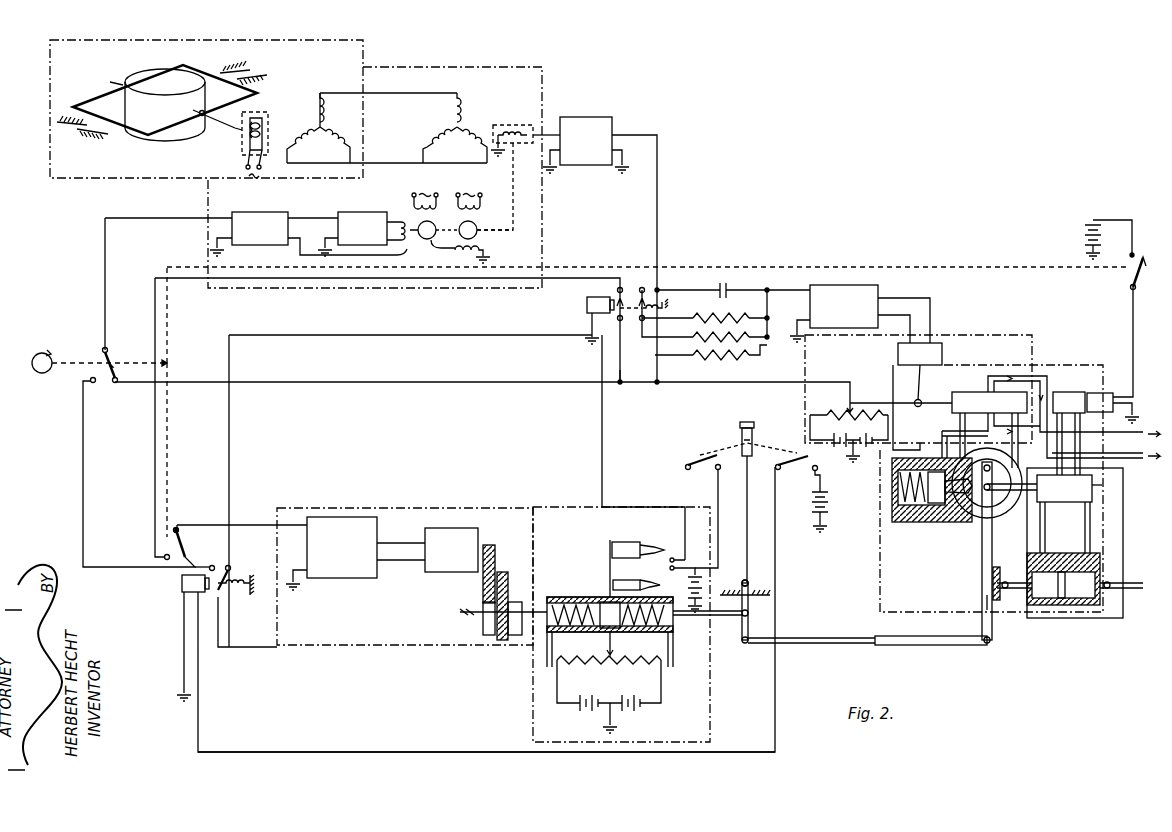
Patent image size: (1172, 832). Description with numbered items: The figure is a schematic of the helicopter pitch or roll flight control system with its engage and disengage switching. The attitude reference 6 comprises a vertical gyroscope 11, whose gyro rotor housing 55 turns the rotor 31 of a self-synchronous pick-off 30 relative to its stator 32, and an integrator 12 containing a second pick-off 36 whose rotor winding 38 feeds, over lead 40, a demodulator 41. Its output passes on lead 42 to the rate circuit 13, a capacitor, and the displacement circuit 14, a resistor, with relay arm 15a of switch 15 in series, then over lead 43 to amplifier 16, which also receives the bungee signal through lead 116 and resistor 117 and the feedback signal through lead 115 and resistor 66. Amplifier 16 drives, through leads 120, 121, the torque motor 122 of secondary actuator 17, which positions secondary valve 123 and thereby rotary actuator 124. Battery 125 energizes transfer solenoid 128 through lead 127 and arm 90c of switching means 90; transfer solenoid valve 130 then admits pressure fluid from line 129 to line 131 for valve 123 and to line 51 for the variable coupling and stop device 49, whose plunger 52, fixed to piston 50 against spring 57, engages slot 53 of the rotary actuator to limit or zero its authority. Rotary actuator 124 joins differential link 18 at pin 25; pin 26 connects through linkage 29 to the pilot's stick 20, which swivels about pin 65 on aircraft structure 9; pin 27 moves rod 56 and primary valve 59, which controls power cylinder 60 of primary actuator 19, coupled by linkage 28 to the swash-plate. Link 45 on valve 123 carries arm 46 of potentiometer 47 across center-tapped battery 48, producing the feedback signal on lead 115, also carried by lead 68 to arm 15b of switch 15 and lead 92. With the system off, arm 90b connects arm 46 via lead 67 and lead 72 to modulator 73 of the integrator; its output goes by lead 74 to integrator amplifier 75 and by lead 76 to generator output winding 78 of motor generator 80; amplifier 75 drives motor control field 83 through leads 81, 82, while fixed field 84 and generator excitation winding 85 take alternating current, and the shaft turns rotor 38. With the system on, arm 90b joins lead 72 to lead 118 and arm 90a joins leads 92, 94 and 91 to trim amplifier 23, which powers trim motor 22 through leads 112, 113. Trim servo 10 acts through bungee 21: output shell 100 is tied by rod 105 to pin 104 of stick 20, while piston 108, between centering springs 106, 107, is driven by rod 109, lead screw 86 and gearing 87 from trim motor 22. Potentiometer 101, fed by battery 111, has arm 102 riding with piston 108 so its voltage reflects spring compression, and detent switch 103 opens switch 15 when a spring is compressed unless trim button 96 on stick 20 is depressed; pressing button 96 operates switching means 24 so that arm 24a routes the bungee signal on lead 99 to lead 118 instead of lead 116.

The attitude reference 6 is at (45, 144).
The aircraft structure 9 is at (83, 128).
The trim servo 10 is at (366, 502).
The vertical gyroscope 11 is at (122, 65).
The integrator 12 is at (509, 64).
The rate circuit 13 is at (738, 285).
The displacement circuit 14 is at (734, 300).
The switch 15 is at (576, 308).
The relay contact or arm 15a is at (640, 325).
The arm 15b is at (622, 287).
The amplifier 16 is at (854, 285).
The secondary actuator 17 is at (1028, 339).
The differential link 18 is at (982, 602).
The primary actuator 19 is at (1134, 520).
The pilot's stick 20 is at (778, 468).
The bungee 21 is at (554, 507).
The trim motor 22 is at (463, 574).
The trim amplifier 23 is at (343, 586).
The switching means 24 is at (237, 568).
The arm 24a is at (226, 596).
The pin 25 is at (1020, 470).
The pin 26 is at (989, 646).
The pin 27 is at (1007, 504).
The linkage 28 is at (1134, 587).
The linkage 29 is at (927, 646).
The self-synchronous pick-off 30 is at (398, 107).
The rotor winding 31 is at (263, 124).
The stator winding 32 is at (324, 98).
The self-synchronous pick-off 36 is at (487, 111).
The rotor winding 38 is at (514, 125).
The lead 40 is at (547, 135).
The demodulator 41 is at (604, 117).
The lead 42 is at (657, 167).
The lead 43 is at (793, 285).
The link 45 is at (865, 392).
The arm 46 is at (848, 404).
The potentiometer 47 is at (818, 420).
The center-tapped battery 48 is at (848, 456).
The variable coupling and stop device 49 is at (956, 525).
The piston 50 is at (902, 522).
The line 51 is at (945, 437).
The plunger 52 is at (934, 506).
The limit providing slot 53 is at (968, 502).
The gyro rotor housing 55 is at (152, 76).
The rod 56 is at (1055, 502).
The spring 57 is at (898, 500).
The primary valve 59 is at (1102, 485).
The power cylinder 60 is at (1096, 567).
The pin 65 is at (750, 579).
The resistor 66 is at (712, 359).
The lead 67 is at (350, 383).
The lead 68 is at (630, 384).
The lead 72 is at (105, 283).
The modulator 73 is at (266, 195).
The lead 74 is at (308, 218).
The integrator amplifier 75 is at (358, 212).
The lead 76 is at (290, 258).
The generator output winding 78 is at (453, 252).
The motor generator 80 is at (486, 240).
The lead 81 is at (402, 220).
The lead 82 is at (416, 250).
The motor control field 83 is at (422, 246).
The fixed field 84 is at (414, 193).
The generator excitation winding 85 is at (468, 193).
The lead screw 86 is at (462, 622).
The gearing 87 is at (502, 549).
The switching means 90 is at (48, 337).
The arm 90a is at (185, 540).
The arm 90b is at (111, 355).
The arm 90c is at (1123, 279).
The lead 91 is at (245, 523).
The lead 92 is at (493, 286).
The lead 94 is at (204, 575).
The trim button 96 is at (748, 421).
The lead 99 is at (358, 648).
The output shell 100 is at (603, 600).
The potentiometer 101 is at (622, 687).
The arm 102 is at (616, 637).
The detent switch 103 is at (604, 548).
The pin 104 is at (743, 640).
The rod 105 is at (694, 614).
The centering spring 106 is at (570, 598).
The centering spring 107 is at (674, 638).
The piston 108 is at (591, 633).
The rod 109 is at (536, 599).
The battery 111 is at (640, 716).
The lead 112 is at (397, 541).
The lead 113 is at (392, 561).
The lead 115 is at (700, 383).
The lead 116 is at (340, 335).
The resistor 117 is at (770, 348).
The lead 118 is at (82, 436).
The lead 120 is at (926, 300).
The lead 121 is at (910, 316).
The torque motor 122 is at (944, 347).
The secondary valve 123 is at (974, 393).
The rotary actuator 124 is at (984, 535).
The battery 125 is at (1090, 244).
The lead 127 is at (1132, 318).
The transfer solenoid 128 is at (1098, 392).
The line 129 is at (1120, 435).
The transfer solenoid valve 130 is at (1064, 392).
The line 131 is at (958, 426).